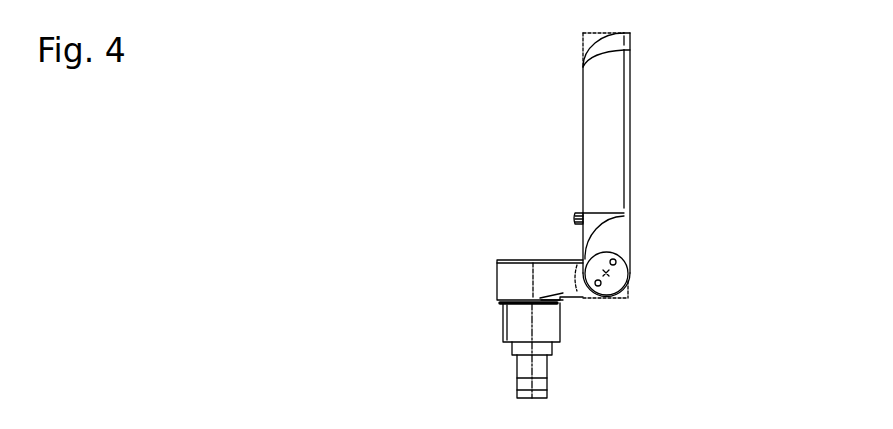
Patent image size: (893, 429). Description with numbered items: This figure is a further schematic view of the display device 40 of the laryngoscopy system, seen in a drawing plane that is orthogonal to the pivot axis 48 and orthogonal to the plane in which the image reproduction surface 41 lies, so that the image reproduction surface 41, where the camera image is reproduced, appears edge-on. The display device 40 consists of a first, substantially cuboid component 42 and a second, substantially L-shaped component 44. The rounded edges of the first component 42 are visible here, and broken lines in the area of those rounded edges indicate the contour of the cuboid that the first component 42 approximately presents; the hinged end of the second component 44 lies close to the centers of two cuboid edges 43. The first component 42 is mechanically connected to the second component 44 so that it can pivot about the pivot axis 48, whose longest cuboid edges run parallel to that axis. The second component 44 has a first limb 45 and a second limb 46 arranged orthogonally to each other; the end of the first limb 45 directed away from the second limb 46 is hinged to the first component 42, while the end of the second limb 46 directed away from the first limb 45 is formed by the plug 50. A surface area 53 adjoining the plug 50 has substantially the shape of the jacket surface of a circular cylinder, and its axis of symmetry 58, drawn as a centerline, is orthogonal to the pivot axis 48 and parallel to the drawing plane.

The display device 40 is at (330, 91).
The image reproduction surface 41 is at (631, 79).
The first component 42 is at (626, 215).
The cuboid edges 43 is at (630, 298).
The second component 44 is at (498, 268).
The first limb 45 is at (553, 260).
The second limb 46 is at (503, 314).
The pivot axis 48 is at (609, 273).
The plug 50 is at (547, 368).
The surface area 53 is at (503, 332).
The axis of symmetry 58 is at (532, 372).